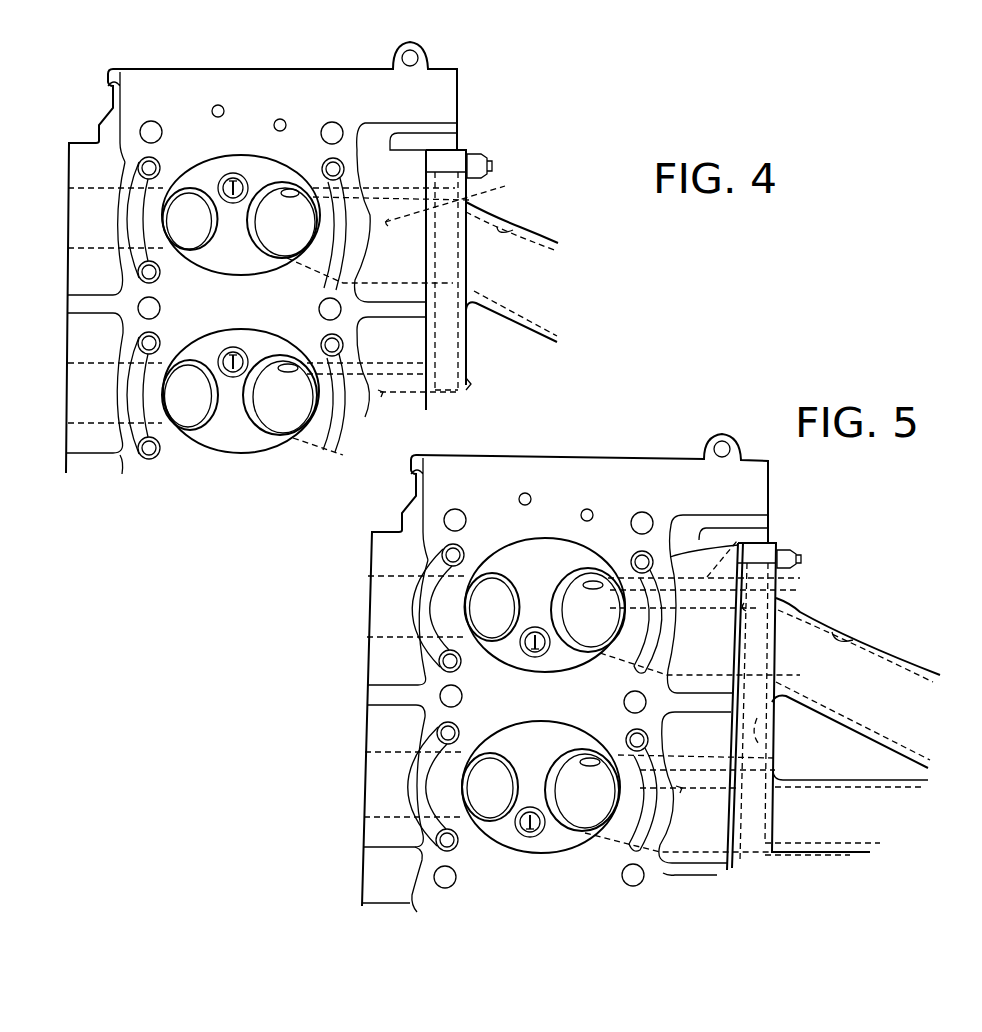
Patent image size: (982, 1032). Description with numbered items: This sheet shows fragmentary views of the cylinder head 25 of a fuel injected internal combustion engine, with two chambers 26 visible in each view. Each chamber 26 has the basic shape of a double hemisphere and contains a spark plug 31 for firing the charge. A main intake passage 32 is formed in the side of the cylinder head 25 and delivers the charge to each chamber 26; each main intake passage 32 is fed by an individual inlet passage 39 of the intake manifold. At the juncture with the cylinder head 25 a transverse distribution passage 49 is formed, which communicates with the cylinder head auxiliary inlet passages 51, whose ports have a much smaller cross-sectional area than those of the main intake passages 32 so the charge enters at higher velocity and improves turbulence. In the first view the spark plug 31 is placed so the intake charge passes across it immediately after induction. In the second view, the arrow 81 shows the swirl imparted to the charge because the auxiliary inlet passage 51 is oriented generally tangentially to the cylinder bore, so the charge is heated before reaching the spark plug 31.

In FIG. 4, the cylinder head 25 is at (437, 93).
In FIG. 5, the cylinder head 25 is at (748, 499).
In FIG. 4, the chamber 26 is at (225, 162).
In FIG. 4, the spark plug 31 is at (233, 204).
In FIG. 5, the spark plug 31 is at (535, 630).
In FIG. 4, the main intake passage 32 is at (402, 415).
In FIG. 5, the main intake passage 32 is at (745, 606).
In FIG. 4, the inlet passage 39 is at (513, 226).
In FIG. 5, the inlet passage 39 is at (862, 637).
In FIG. 4, the transverse distribution passage 49 is at (472, 344).
In FIG. 5, the transverse distribution passage 49 is at (768, 741).
In FIG. 4, the cylinder head auxiliary inlet passage 51 is at (388, 193).
In FIG. 5, the cylinder head auxiliary inlet passage 51 is at (750, 536).
In FIG. 5, the arrow 81 is at (555, 562).